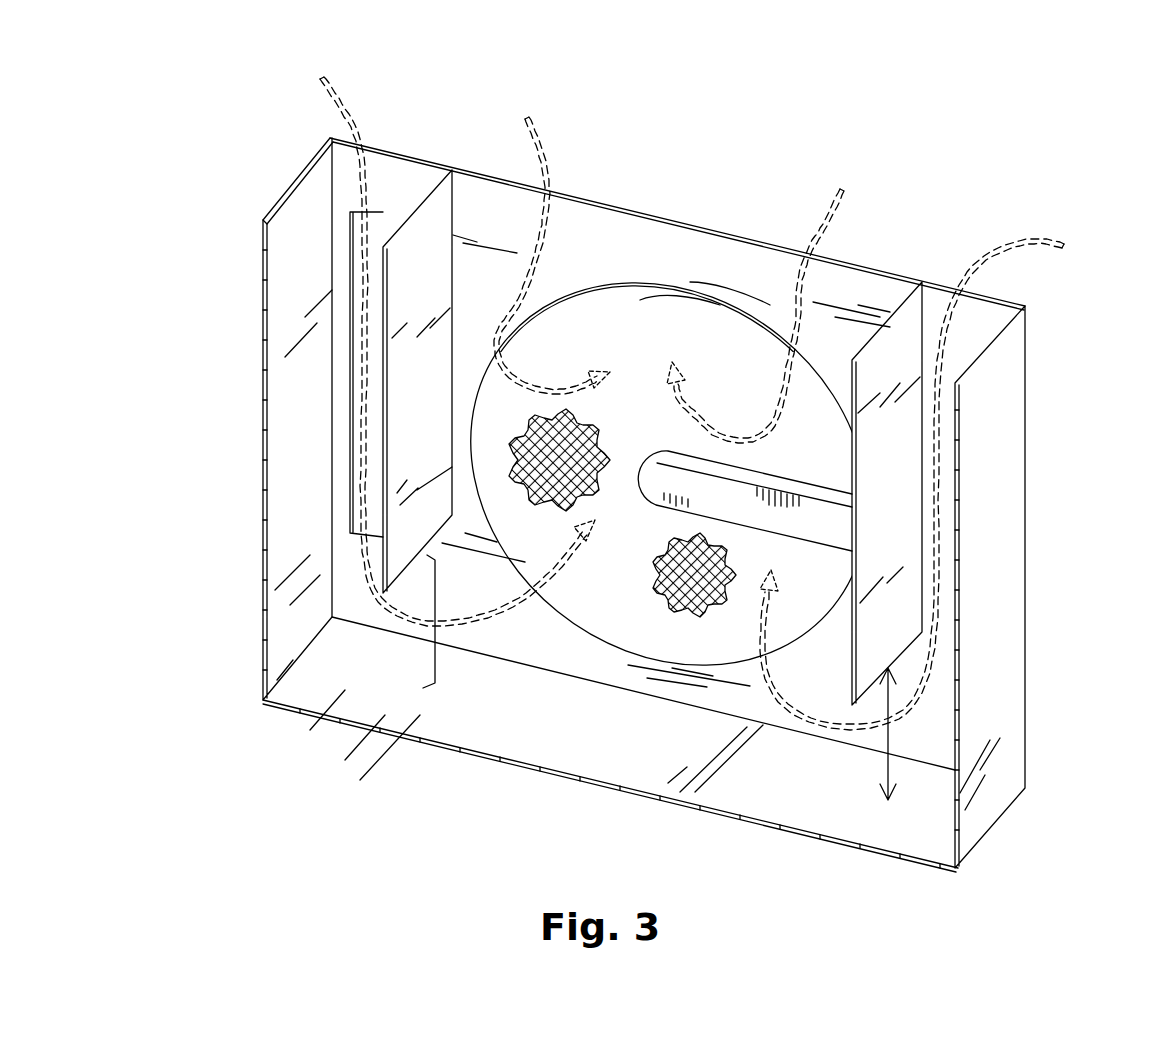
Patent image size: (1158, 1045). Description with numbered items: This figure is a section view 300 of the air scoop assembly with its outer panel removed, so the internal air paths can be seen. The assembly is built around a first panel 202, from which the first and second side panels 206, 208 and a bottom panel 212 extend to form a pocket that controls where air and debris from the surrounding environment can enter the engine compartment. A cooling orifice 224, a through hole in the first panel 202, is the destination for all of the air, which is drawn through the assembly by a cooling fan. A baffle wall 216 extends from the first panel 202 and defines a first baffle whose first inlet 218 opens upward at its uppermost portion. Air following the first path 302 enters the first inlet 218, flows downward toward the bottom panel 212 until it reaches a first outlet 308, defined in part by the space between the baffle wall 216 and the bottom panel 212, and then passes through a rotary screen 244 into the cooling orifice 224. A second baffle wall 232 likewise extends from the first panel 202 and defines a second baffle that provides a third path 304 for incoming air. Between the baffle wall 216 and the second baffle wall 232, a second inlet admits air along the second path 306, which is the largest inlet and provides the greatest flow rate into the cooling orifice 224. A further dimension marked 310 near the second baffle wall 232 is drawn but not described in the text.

The section view 300 is at (934, 134).
The first path 302 is at (335, 103).
The third path 304 is at (1013, 247).
The second path 306 is at (548, 146).
The first outlet 308 is at (437, 600).
The gap between second partition and bottom wall 310 is at (888, 768).
The first panel 202 is at (602, 266).
The first side panel 206 is at (1019, 679).
The second side panel 208 is at (263, 357).
The bottom panel 212 is at (639, 754).
The baffle wall 216 is at (444, 299).
The first inlet 218 is at (278, 191).
The cooling orifice 224 is at (702, 287).
The second baffle wall 232 is at (909, 474).
The rotary screen 244 is at (656, 313).